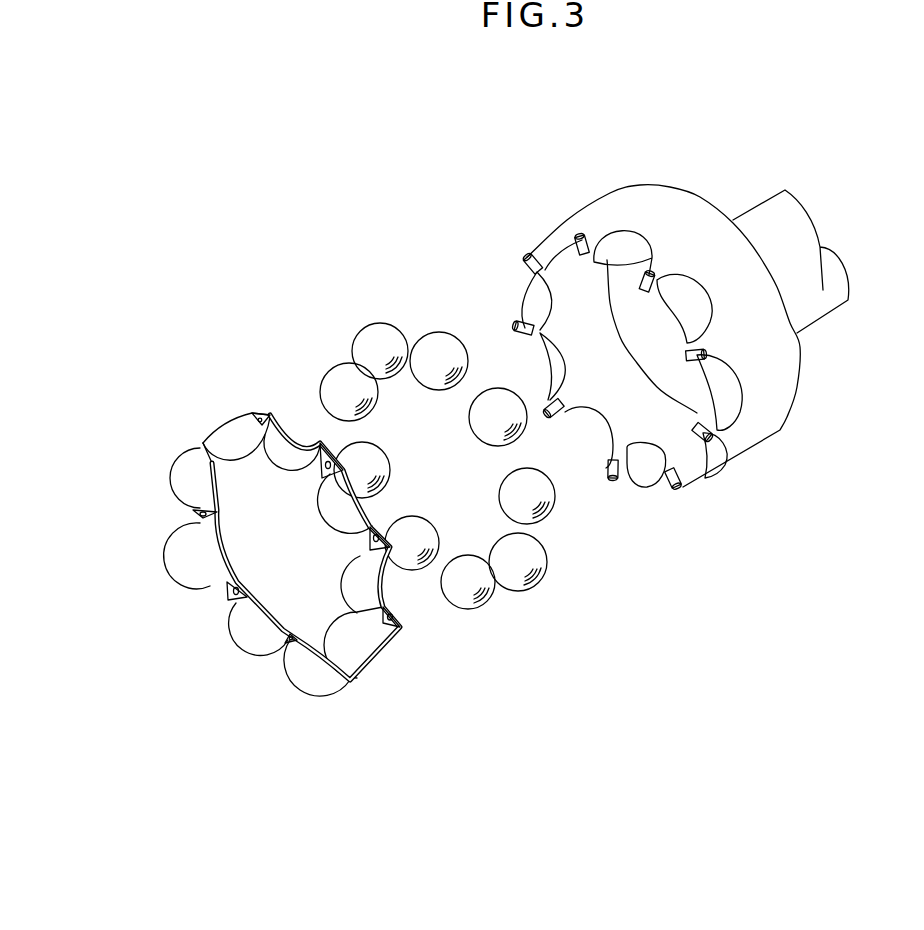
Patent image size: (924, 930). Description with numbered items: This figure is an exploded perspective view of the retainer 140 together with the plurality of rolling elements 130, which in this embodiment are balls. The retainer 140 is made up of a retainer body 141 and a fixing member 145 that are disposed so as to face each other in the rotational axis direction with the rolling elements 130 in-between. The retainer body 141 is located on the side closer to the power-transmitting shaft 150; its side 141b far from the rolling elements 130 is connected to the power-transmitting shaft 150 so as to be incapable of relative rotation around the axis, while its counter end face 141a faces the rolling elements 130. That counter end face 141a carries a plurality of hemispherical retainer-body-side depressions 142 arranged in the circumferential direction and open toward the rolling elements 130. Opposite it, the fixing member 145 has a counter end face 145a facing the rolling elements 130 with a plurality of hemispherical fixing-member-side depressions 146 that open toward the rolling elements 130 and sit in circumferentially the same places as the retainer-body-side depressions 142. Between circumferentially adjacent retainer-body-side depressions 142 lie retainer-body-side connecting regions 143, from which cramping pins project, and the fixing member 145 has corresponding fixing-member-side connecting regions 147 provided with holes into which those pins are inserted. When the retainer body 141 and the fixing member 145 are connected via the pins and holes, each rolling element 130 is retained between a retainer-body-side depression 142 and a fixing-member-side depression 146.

The rolling elements 130 is at (330, 377).
The retainer 140 is at (497, 422).
The retainer body 141 is at (641, 344).
The counter end face of the retainer body 141a is at (512, 270).
The side of the retainer body far from the rolling elements 141b is at (678, 182).
The retainer-body-side depressions 142 is at (617, 233).
The retainer-body-side connecting regions 143 is at (583, 235).
The fixing member 145 is at (298, 532).
The counter end face of the fixing member 145a is at (283, 412).
The fixing-member-side depressions 146 is at (290, 440).
The fixing-member-side connecting regions 147 is at (197, 515).
The power-transmitting shaft 150 is at (769, 211).